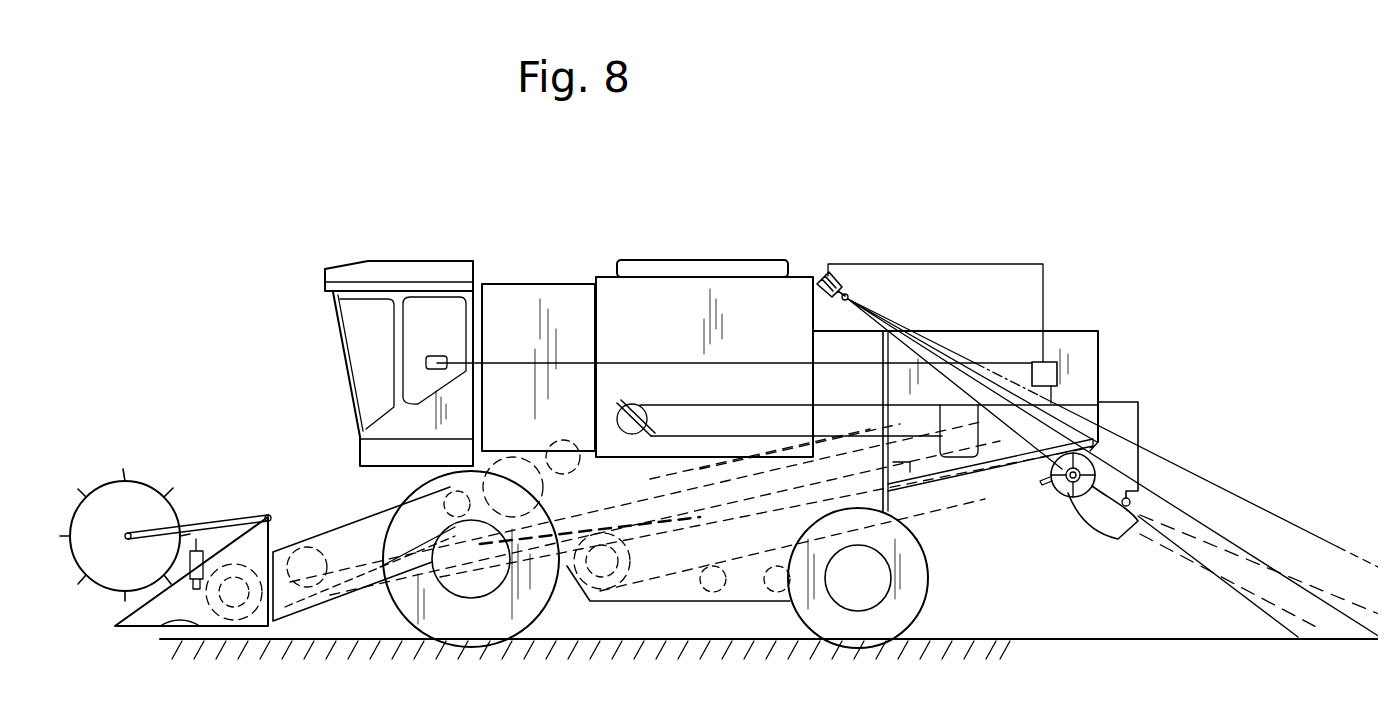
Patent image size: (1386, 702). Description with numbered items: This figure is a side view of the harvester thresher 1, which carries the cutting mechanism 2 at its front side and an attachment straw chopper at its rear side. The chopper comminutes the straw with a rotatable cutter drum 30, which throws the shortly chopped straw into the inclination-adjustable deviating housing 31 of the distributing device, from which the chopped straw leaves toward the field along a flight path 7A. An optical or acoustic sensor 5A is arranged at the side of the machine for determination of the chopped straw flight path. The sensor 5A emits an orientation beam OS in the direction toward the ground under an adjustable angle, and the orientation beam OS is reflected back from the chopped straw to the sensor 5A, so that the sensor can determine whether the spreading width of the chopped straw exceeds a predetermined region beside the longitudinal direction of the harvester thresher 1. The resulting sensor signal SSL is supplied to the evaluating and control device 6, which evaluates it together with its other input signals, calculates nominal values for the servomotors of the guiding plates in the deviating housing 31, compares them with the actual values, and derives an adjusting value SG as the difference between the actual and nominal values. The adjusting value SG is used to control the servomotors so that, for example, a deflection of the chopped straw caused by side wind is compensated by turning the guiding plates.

The harvester thresher 1 is at (661, 341).
The cutting mechanism 2 is at (211, 504).
The optical or acoustic sensor 5A is at (822, 276).
The evaluating and control device 6 is at (1046, 364).
The measuring beam 7A is at (1250, 563).
The cutter drum 30 is at (1058, 490).
The deviating housing 31 is at (1100, 542).
The sensor signal SSL is at (935, 296).
The adjusting value SG is at (1126, 388).
The orientation beam OS is at (1210, 483).